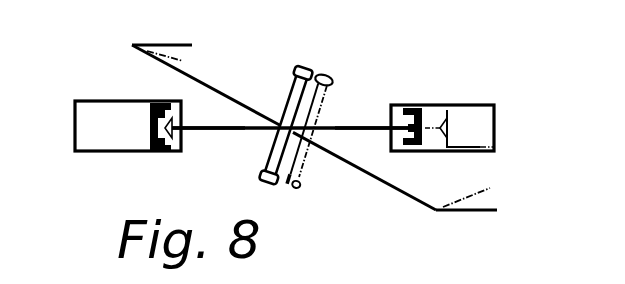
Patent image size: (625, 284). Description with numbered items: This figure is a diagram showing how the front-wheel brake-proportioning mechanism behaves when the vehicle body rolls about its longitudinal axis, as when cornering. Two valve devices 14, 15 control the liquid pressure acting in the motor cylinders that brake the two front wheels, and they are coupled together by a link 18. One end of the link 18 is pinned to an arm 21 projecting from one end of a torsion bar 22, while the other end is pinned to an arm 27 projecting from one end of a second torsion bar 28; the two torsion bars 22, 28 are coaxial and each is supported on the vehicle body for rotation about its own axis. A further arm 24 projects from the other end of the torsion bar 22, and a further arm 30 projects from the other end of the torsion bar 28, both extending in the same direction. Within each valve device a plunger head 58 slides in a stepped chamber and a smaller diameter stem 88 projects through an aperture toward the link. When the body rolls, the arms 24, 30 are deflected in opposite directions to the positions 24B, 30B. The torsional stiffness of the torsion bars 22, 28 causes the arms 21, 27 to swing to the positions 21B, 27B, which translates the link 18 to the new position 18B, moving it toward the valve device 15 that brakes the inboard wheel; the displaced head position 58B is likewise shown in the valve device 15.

The valve device 14 is at (96, 160).
The valve device 15 is at (488, 104).
The link 18 is at (278, 146).
The new position of link 18B is at (323, 103).
The arm 21 is at (288, 91).
The position of arm 21B is at (294, 78).
The torsion bar 22 is at (182, 77).
The arm 24 is at (160, 45).
The position of arm 24B is at (184, 61).
The arm 27 is at (266, 171).
The position of arm 27B is at (336, 182).
The torsion bar 28 is at (394, 189).
The arm 30 is at (465, 211).
The position of arm 30B is at (490, 188).
The plunger head 58 is at (150, 134).
The socket insert axis 58B is at (495, 146).
The plunger stem 88 is at (242, 127).